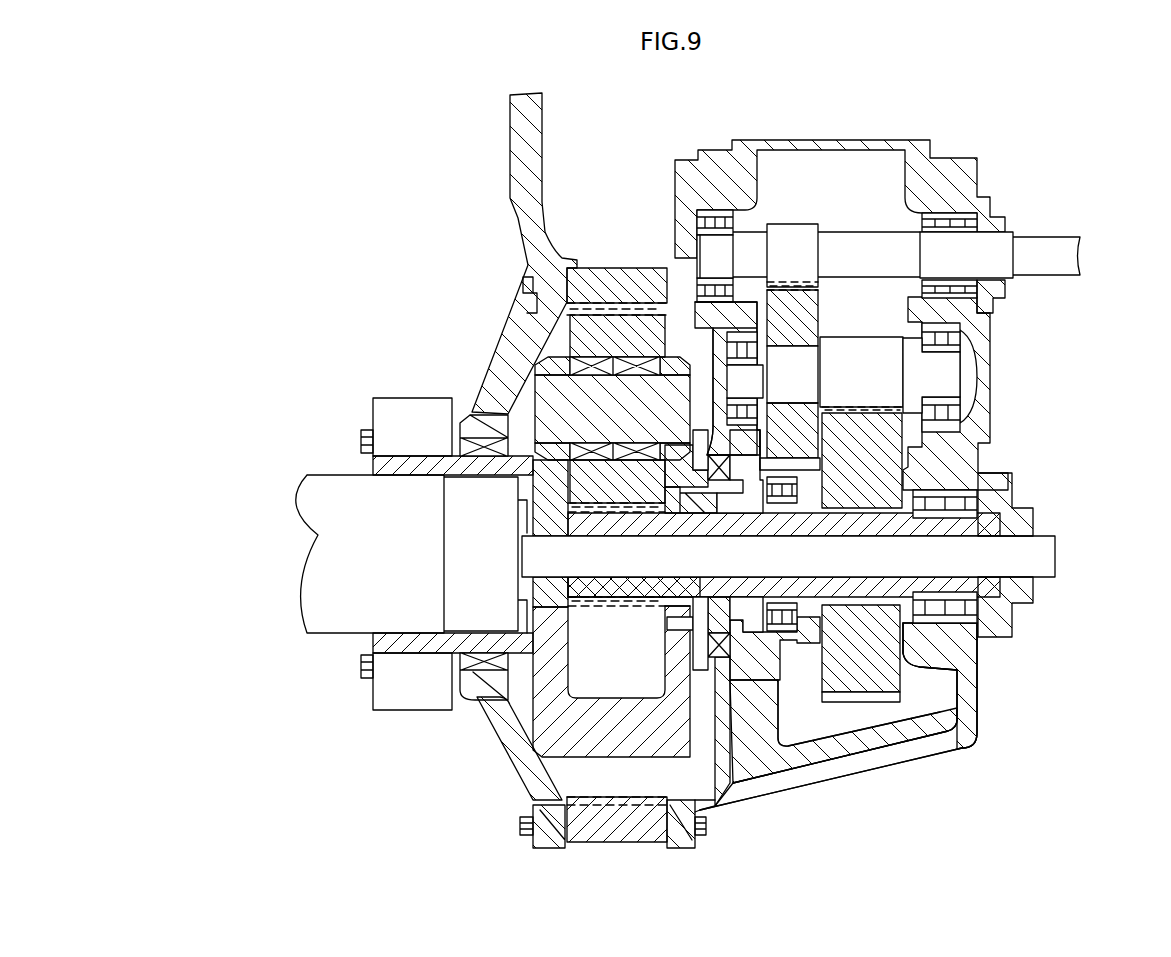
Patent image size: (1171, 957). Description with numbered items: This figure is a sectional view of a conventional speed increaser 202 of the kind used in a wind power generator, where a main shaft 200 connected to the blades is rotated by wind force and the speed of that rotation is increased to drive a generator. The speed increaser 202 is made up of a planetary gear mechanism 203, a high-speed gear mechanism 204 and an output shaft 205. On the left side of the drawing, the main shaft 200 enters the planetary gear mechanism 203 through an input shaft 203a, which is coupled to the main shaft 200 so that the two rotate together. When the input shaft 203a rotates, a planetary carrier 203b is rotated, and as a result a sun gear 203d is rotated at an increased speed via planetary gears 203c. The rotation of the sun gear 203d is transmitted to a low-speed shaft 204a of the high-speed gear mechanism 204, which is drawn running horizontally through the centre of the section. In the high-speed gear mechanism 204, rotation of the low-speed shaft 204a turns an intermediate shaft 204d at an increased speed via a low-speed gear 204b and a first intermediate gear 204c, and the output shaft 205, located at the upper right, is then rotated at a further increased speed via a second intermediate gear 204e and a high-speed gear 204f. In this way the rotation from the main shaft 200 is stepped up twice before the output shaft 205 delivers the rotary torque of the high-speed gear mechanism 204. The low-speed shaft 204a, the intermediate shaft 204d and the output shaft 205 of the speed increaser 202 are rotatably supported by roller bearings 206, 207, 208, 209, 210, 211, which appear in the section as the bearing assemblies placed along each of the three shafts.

The main shaft 200 is at (322, 578).
The speed increaser 202 is at (730, 815).
The planetary gear mechanism 203 is at (557, 342).
The input shaft 203a is at (388, 470).
The planetary carrier 203b is at (540, 468).
The planetary gears 203c is at (572, 328).
The sun gear 203d is at (590, 590).
The high-speed gear mechanism 204 is at (862, 705).
The low-speed shaft 204a is at (980, 528).
The low-speed gear 204b is at (883, 683).
The first intermediate gear 204c is at (883, 365).
The intermediate shaft 204d is at (942, 380).
The second intermediate gear 204e is at (810, 303).
The high-speed gear 204f is at (793, 240).
The output shaft 205 is at (1040, 240).
The roller bearing 206 is at (797, 640).
The roller bearing 207 is at (955, 650).
The roller bearing 208 is at (713, 330).
The roller bearing 209 is at (960, 423).
The roller bearing 210 is at (675, 197).
The roller bearing 211 is at (962, 210).